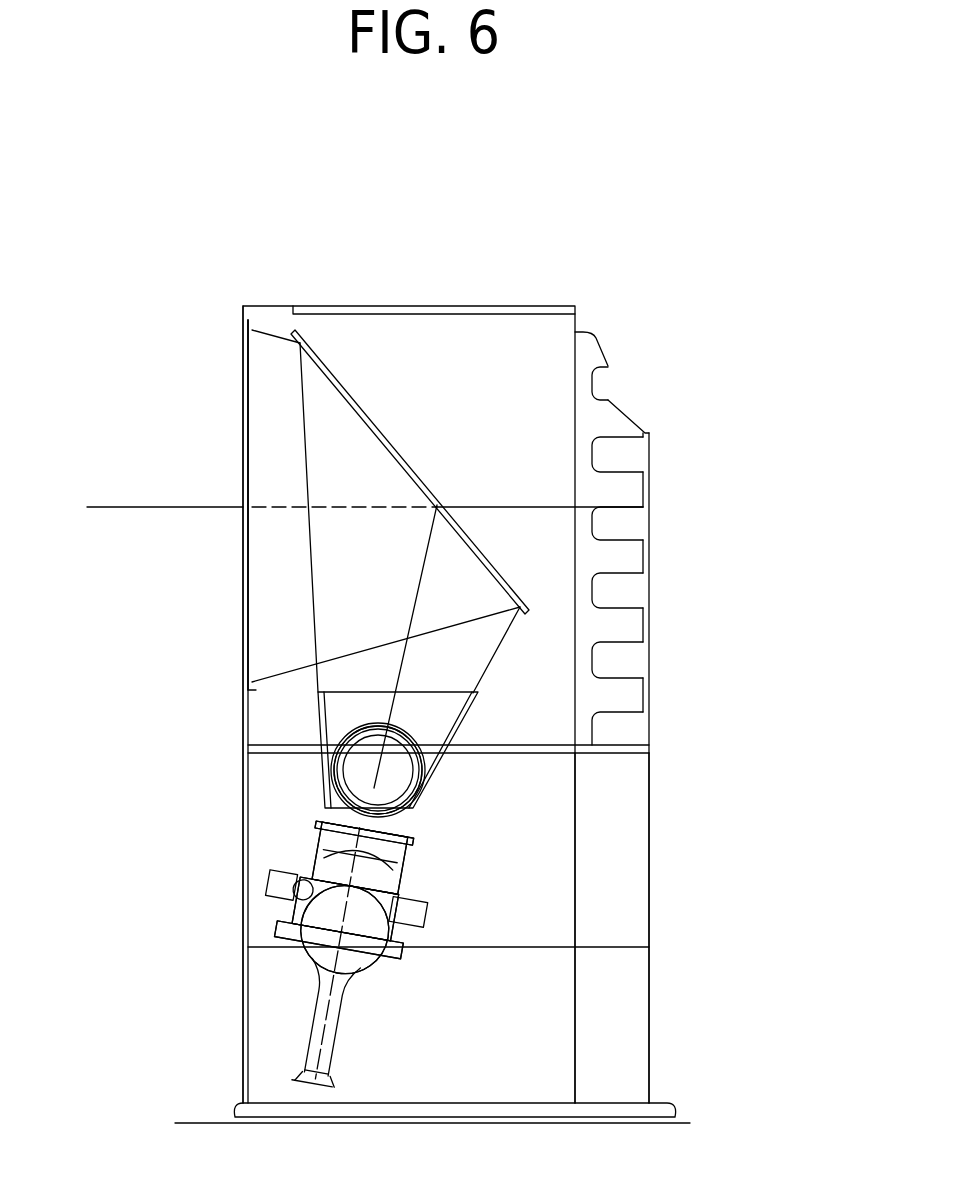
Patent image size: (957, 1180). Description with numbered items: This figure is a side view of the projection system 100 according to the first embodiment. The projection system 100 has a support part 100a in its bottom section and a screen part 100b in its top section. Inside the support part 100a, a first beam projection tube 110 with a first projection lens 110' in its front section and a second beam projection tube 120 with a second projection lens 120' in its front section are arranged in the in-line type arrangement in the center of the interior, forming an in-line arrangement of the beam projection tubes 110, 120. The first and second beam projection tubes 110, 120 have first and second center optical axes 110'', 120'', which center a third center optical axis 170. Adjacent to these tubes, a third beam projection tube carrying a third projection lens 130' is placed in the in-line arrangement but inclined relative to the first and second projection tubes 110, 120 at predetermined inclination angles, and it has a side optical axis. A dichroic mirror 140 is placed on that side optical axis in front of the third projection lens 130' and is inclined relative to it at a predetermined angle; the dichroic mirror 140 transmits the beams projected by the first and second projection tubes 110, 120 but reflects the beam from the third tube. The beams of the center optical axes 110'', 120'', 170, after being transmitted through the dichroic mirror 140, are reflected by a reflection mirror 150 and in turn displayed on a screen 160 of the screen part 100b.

The projection system 100 is at (282, 300).
The support part 100a is at (656, 824).
The screen part 100b is at (656, 462).
The first beam projection tube 110 is at (246, 956).
The second beam projection tube 120 is at (233, 929).
The first projection lens 110' is at (236, 840).
The second projection lens 120' is at (236, 840).
The first center optical axis 110'' is at (236, 770).
The second center optical axis 120'' is at (236, 770).
The third projection lens 130' is at (429, 784).
The dichroic mirror 140 is at (434, 722).
The reflection mirror 150 is at (403, 455).
The screen 160 is at (242, 372).
The third center optical axis 170 is at (397, 658).